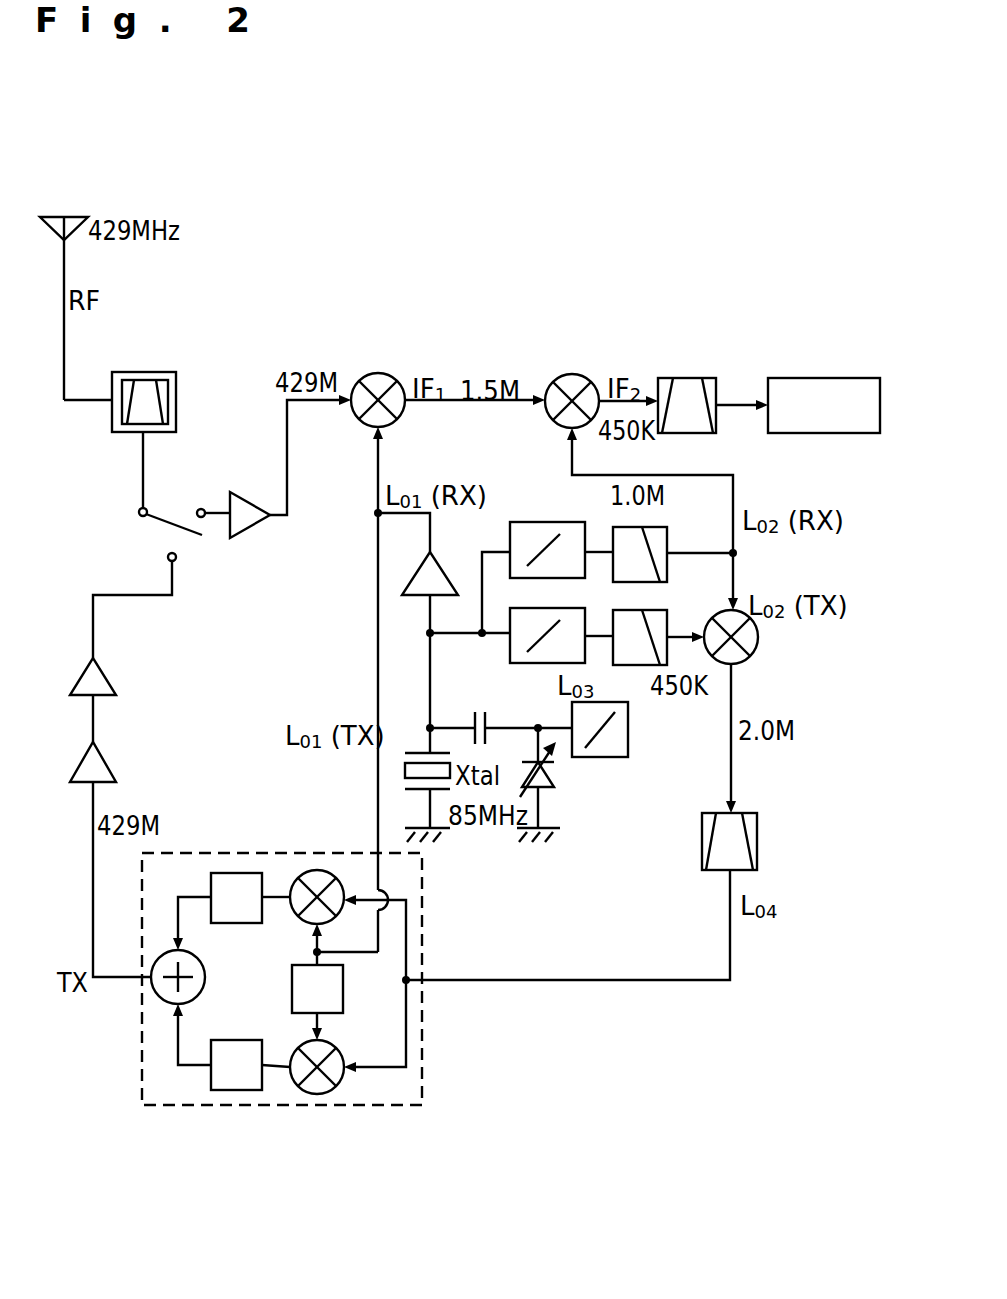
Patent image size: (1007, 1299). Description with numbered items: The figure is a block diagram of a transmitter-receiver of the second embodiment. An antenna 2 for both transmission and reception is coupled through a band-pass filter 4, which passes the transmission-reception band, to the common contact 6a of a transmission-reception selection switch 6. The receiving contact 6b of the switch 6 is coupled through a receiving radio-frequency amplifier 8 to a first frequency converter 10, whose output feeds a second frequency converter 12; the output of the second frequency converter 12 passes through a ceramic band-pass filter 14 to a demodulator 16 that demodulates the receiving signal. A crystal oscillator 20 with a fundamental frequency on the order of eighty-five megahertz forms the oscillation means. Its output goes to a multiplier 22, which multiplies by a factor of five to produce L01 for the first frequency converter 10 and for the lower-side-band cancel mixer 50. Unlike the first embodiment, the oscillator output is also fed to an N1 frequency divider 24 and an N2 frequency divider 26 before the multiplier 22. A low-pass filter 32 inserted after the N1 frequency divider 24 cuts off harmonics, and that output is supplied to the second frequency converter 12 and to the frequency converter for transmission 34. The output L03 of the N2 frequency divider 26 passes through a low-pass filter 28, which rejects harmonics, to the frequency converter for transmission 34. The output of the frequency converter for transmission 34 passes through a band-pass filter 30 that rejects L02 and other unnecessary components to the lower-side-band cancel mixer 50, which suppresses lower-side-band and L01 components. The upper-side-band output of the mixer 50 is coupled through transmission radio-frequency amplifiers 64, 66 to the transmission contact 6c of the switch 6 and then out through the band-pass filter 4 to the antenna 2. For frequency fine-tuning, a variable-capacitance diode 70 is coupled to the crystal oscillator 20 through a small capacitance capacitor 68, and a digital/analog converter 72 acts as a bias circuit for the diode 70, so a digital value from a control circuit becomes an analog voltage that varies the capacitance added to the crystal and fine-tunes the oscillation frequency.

The antenna 2 is at (56, 218).
The band-pass filter 4 is at (176, 400).
The transmission-reception selection switch 6 is at (164, 516).
The common contact 6a is at (141, 518).
The receiving contact 6b is at (201, 508).
The transmission contact 6c is at (176, 558).
The receiving radio-frequency amplifier 8 is at (250, 520).
The first frequency converter 10 is at (375, 373).
The second frequency converter 12 is at (568, 374).
The band-pass filter 14 is at (685, 378).
The demodulator 16 is at (822, 378).
The crystal oscillator 20 is at (417, 753).
The multiplier 22 is at (437, 568).
The N1 frequency divider 24 is at (550, 522).
The N2 frequency divider 26 is at (540, 664).
The low-pass filter 28 is at (668, 610).
The band-pass filter 30 is at (760, 840).
The low-pass filter 32 is at (665, 527).
The frequency converter for transmission 34 is at (760, 637).
The lower-side-band cancel mixer 50 is at (422, 1040).
The transmission radio-frequency amplifier 64 is at (102, 770).
The transmission radio-frequency amplifier 66 is at (100, 680).
The small capacitance capacitor 68 is at (478, 710).
The variable-capacitance diode 70 is at (556, 780).
The digital/analog converter 72 is at (630, 735).